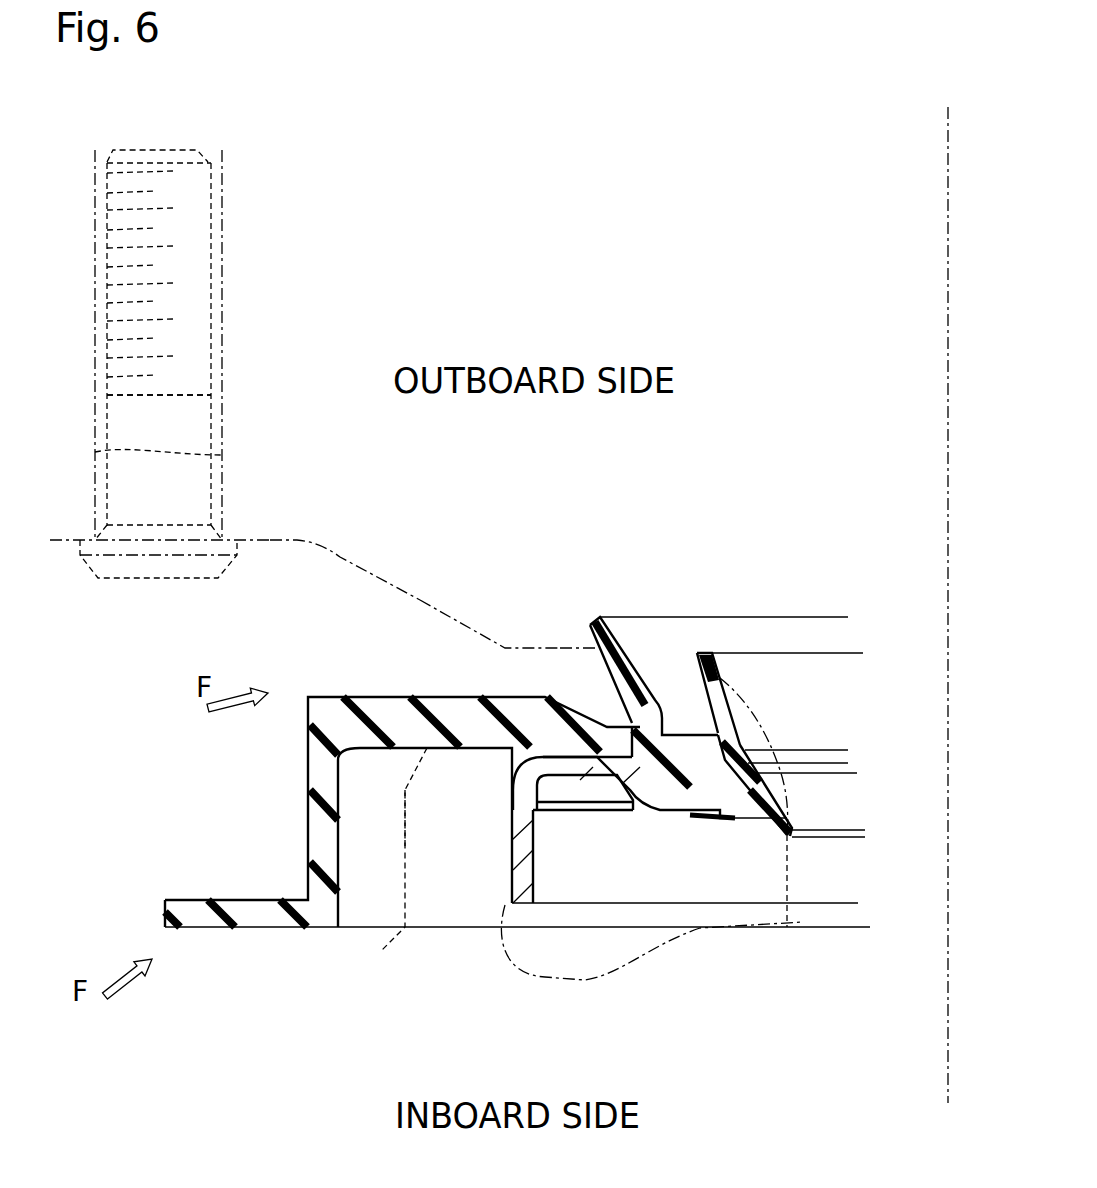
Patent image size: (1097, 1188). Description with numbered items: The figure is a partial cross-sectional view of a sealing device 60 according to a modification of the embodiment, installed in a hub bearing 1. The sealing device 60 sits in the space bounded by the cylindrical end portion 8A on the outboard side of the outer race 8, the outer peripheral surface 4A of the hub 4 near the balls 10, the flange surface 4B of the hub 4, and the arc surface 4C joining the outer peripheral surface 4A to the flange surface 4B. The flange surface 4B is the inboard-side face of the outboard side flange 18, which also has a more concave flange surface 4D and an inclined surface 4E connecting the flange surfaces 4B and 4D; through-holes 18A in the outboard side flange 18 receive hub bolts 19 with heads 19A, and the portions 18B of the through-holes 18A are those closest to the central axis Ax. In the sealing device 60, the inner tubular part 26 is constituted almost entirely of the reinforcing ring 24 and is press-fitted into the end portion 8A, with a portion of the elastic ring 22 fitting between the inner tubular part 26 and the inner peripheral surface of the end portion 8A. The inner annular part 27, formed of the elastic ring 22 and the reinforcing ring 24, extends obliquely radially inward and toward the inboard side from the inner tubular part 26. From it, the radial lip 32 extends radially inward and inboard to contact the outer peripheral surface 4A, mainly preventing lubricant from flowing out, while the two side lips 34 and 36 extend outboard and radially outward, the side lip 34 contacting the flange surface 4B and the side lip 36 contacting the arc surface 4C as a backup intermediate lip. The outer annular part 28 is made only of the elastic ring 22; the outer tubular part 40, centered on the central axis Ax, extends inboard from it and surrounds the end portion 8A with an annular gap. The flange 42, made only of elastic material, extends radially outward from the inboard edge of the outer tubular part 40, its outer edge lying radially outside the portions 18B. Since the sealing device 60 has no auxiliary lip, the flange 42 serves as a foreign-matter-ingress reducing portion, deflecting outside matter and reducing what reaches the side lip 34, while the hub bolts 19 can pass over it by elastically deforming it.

The hub bearing 1 is at (445, 801).
The hub 4 is at (537, 742).
The outer peripheral surface 4A is at (787, 885).
The flange surface 4B is at (568, 647).
The arc surface 4C is at (757, 718).
The flange surface 4D is at (283, 540).
The inclined surface 4E is at (422, 605).
The outer race 8 is at (390, 850).
The cylindrical end portion 8A is at (403, 817).
The balls 10 is at (828, 935).
The outboard side flange 18 is at (186, 396).
The through-holes 18A is at (222, 455).
The portions closest to the central axis 18B is at (220, 347).
The hub bolts 19 is at (207, 385).
The heads 19A is at (98, 578).
The elastic ring 22 is at (313, 742).
The reinforcing ring 24 is at (527, 860).
The inner tubular part 26 is at (522, 903).
The inner annular part 27 is at (597, 770).
The outer annular part 28 is at (457, 703).
The radial lip 32 is at (792, 830).
The side lip 34 is at (615, 633).
The side lip 36 is at (713, 662).
The outer tubular part 40 is at (312, 823).
The flange 42 is at (215, 903).
The sealing device 60 is at (731, 662).
The central axis Ax is at (947, 1095).